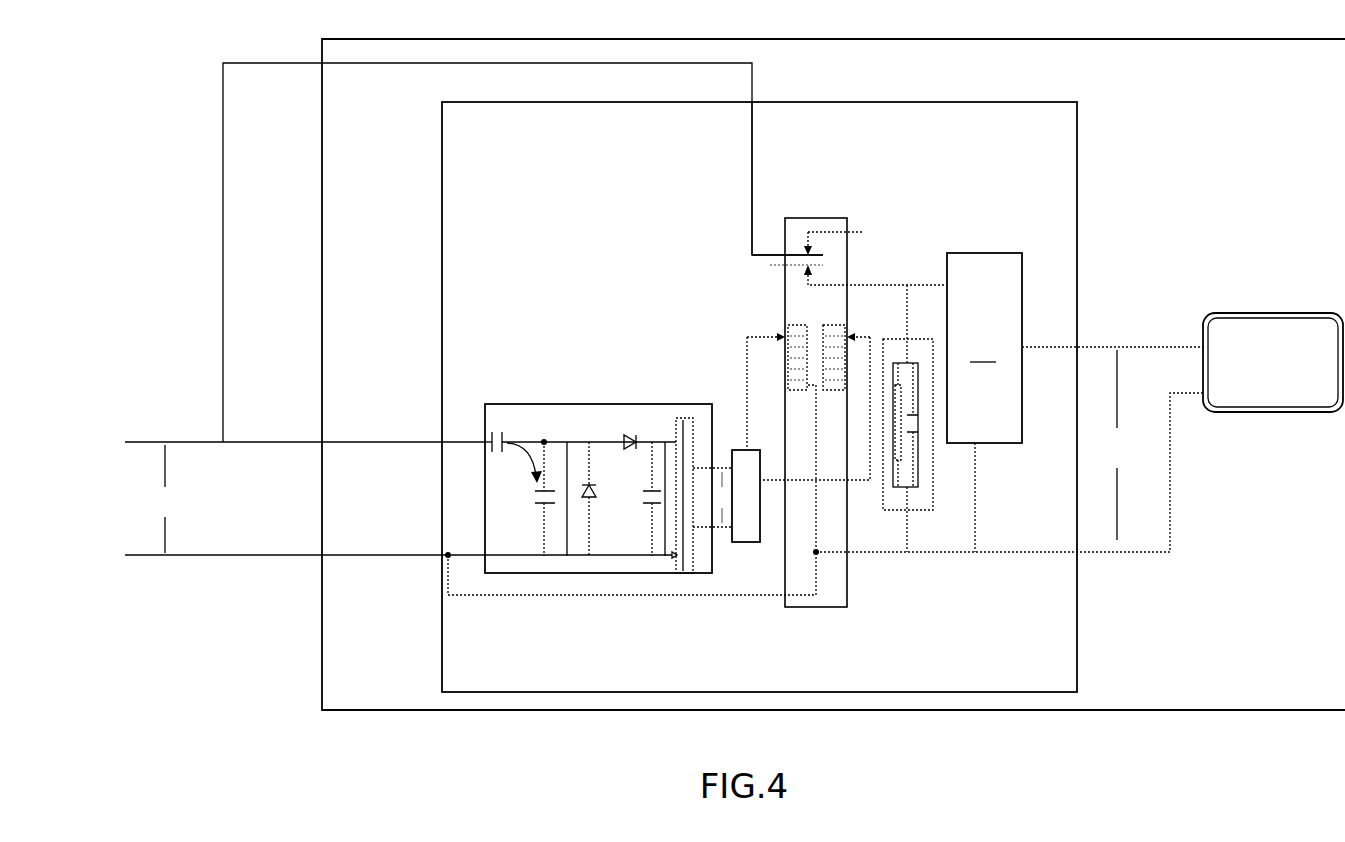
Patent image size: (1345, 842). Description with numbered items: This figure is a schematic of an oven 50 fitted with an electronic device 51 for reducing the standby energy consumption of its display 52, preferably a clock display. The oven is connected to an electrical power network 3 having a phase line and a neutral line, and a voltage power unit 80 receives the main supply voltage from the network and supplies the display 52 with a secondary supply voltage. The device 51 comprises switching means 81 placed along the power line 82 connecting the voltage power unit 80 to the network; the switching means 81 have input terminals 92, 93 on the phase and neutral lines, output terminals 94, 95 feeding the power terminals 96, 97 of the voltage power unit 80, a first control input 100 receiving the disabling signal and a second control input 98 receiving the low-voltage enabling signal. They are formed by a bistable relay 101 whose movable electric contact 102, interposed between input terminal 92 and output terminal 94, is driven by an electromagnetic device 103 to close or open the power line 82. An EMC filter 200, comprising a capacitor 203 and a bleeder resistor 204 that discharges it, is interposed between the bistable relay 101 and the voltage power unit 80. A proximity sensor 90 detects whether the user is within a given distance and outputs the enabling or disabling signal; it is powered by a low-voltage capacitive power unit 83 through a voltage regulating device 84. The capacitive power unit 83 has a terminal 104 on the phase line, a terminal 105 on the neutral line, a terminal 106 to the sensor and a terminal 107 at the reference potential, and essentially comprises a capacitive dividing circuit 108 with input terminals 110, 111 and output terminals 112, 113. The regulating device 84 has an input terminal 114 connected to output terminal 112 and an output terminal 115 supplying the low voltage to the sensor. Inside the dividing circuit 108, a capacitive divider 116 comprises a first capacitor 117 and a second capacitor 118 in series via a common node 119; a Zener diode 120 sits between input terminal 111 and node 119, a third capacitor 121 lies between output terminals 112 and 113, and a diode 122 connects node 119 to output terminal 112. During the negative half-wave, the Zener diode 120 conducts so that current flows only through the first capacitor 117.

The electrical power network 3 is at (100, 483).
The oven 50 is at (1215, 710).
The device for reducing energy consumption 51 is at (1077, 212).
The display 52 is at (1287, 313).
The voltage power unit 80 is at (1075, 396).
The switching means 81 is at (841, 215).
The power line 82 is at (755, 228).
The low-voltage capacitive power unit 83 is at (595, 573).
The voltage regulating device 84 is at (687, 573).
The proximity sensor 90 is at (747, 545).
The input terminal 92 is at (773, 253).
The input terminal 93 is at (780, 598).
The output terminal 94 is at (857, 283).
The output terminal 95 is at (860, 553).
The power terminal 96 is at (907, 287).
The power terminal 97 is at (967, 553).
The second control input 98 is at (791, 307).
The first control input 100 is at (933, 283).
The bistable relay 101 is at (821, 205).
The electric contact 102 is at (833, 230).
The electromagnetic device 103 is at (796, 314).
The terminal 104 is at (460, 440).
The terminal 105 is at (438, 560).
The terminal 106 is at (716, 468).
The terminal 107 is at (723, 527).
The capacitive dividing circuit 108 is at (628, 436).
The input terminal 110 is at (483, 438).
The input terminal 111 is at (485, 558).
The output terminal 112 is at (663, 440).
The output terminal 113 is at (660, 557).
The input terminal 114 is at (675, 418).
The output terminal 115 is at (700, 470).
The capacitive divider 116 is at (536, 426).
The first capacitor 117 is at (492, 432).
The second capacitor 118 is at (533, 498).
The common node 119 is at (572, 426).
The Zener diode 120 is at (593, 485).
The third capacitor 121 is at (643, 498).
The diode 122 is at (624, 420).
The EMC filter 200 is at (930, 512).
The capacitor 203 is at (920, 425).
The bleeder resistor 204 is at (892, 442).